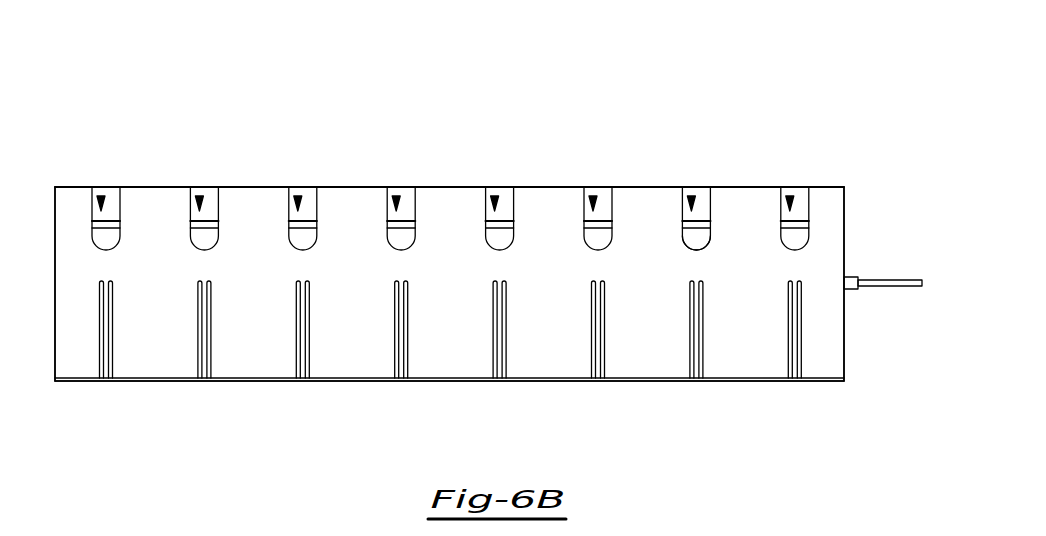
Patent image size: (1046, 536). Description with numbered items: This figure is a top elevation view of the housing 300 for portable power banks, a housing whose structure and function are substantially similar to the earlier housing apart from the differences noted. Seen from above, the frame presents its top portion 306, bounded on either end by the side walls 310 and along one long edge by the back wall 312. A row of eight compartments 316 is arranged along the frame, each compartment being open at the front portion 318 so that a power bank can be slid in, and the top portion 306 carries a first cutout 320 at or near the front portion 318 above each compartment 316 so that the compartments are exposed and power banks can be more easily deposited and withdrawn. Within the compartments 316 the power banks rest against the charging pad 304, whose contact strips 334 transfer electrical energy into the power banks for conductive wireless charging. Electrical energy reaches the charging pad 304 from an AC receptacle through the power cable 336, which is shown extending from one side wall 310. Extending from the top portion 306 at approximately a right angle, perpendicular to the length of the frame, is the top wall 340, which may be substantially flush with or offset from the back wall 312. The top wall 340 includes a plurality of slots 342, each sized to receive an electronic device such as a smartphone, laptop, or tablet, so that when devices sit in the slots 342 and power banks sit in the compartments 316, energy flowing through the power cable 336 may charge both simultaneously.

The housing 300 is at (570, 72).
The charging pad 304 is at (402, 228).
The top portion 306 is at (108, 262).
The side walls 310 is at (846, 212).
The back wall 312 is at (815, 382).
The compartments 316 is at (801, 205).
The front portion 318 is at (366, 78).
The first cutouts 320 is at (790, 196).
The contact strips 334 is at (692, 240).
The power cable 336 is at (905, 278).
The top wall 340 is at (828, 378).
The slots 342 is at (106, 378).